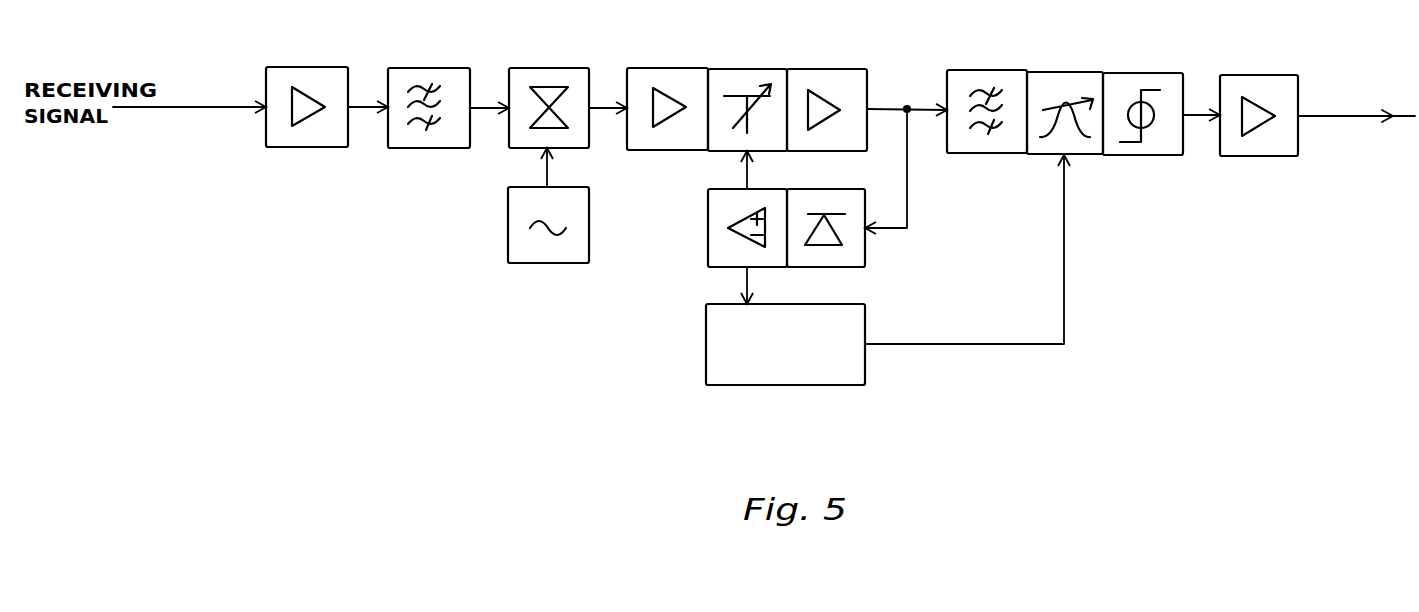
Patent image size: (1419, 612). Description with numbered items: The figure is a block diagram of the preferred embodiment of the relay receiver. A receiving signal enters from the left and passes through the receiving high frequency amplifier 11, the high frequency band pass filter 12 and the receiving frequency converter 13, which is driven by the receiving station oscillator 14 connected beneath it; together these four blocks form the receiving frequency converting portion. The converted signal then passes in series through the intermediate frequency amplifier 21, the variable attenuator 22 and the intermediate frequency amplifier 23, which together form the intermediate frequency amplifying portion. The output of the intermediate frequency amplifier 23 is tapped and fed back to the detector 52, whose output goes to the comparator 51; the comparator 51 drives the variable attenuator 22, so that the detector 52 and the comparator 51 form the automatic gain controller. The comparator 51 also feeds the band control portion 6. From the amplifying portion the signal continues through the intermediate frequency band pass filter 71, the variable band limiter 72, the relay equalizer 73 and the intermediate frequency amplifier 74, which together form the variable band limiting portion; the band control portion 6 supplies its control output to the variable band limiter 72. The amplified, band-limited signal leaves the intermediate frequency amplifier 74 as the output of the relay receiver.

The receiving high frequency amplifier 11 is at (313, 66).
The high frequency band pass filter 12 is at (422, 67).
The receiving frequency converter 13 is at (545, 67).
The receiving station oscillator 14 is at (508, 235).
The intermediate frequency amplifier 21 is at (660, 67).
The variable attenuator 22 is at (745, 68).
The intermediate frequency amplifier 23 is at (828, 68).
The comparator 51 is at (708, 236).
The detector 52 is at (865, 252).
The band control portion 6 is at (706, 360).
The intermediate frequency band pass filter 71 is at (988, 70).
The variable band limiter 72 is at (1068, 72).
The relay equalizer 73 is at (1143, 73).
The intermediate frequency amplifier 74 is at (1270, 74).